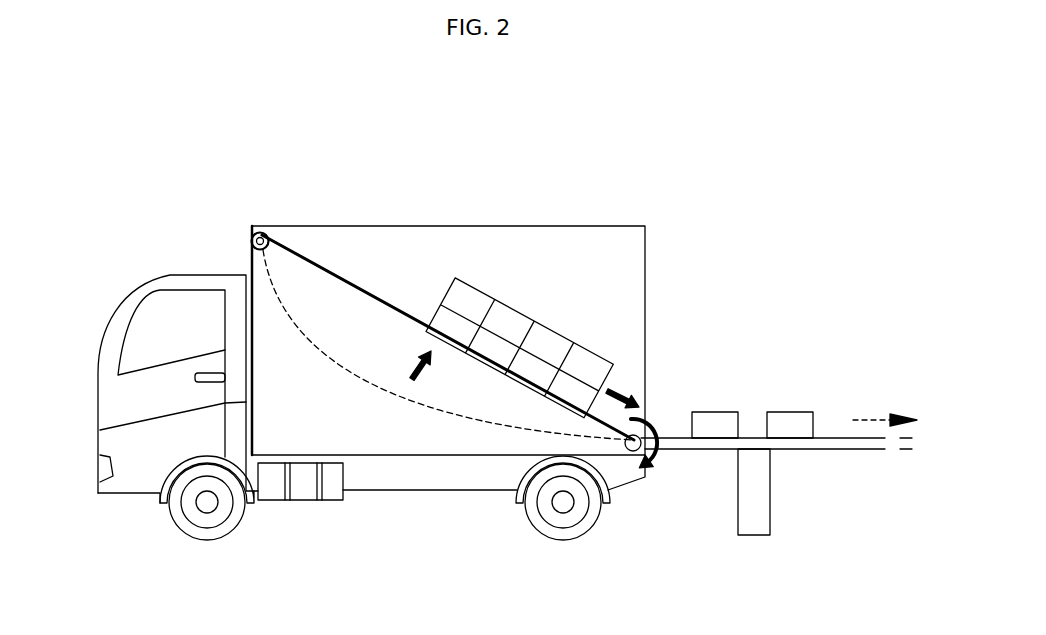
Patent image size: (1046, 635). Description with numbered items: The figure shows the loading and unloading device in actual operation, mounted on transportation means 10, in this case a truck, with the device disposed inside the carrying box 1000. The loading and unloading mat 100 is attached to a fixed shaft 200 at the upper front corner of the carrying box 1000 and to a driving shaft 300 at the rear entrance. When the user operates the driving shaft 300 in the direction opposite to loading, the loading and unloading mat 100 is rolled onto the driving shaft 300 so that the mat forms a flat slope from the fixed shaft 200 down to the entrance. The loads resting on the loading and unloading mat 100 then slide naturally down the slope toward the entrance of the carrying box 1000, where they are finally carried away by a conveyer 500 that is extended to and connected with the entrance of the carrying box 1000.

The transportation means 10 is at (132, 312).
The loading and unloading mat 100 is at (353, 289).
The fixed shaft 200 is at (269, 242).
The driving shaft 300 is at (629, 455).
The conveyer 500 is at (825, 449).
The carrying box 1000 is at (552, 226).